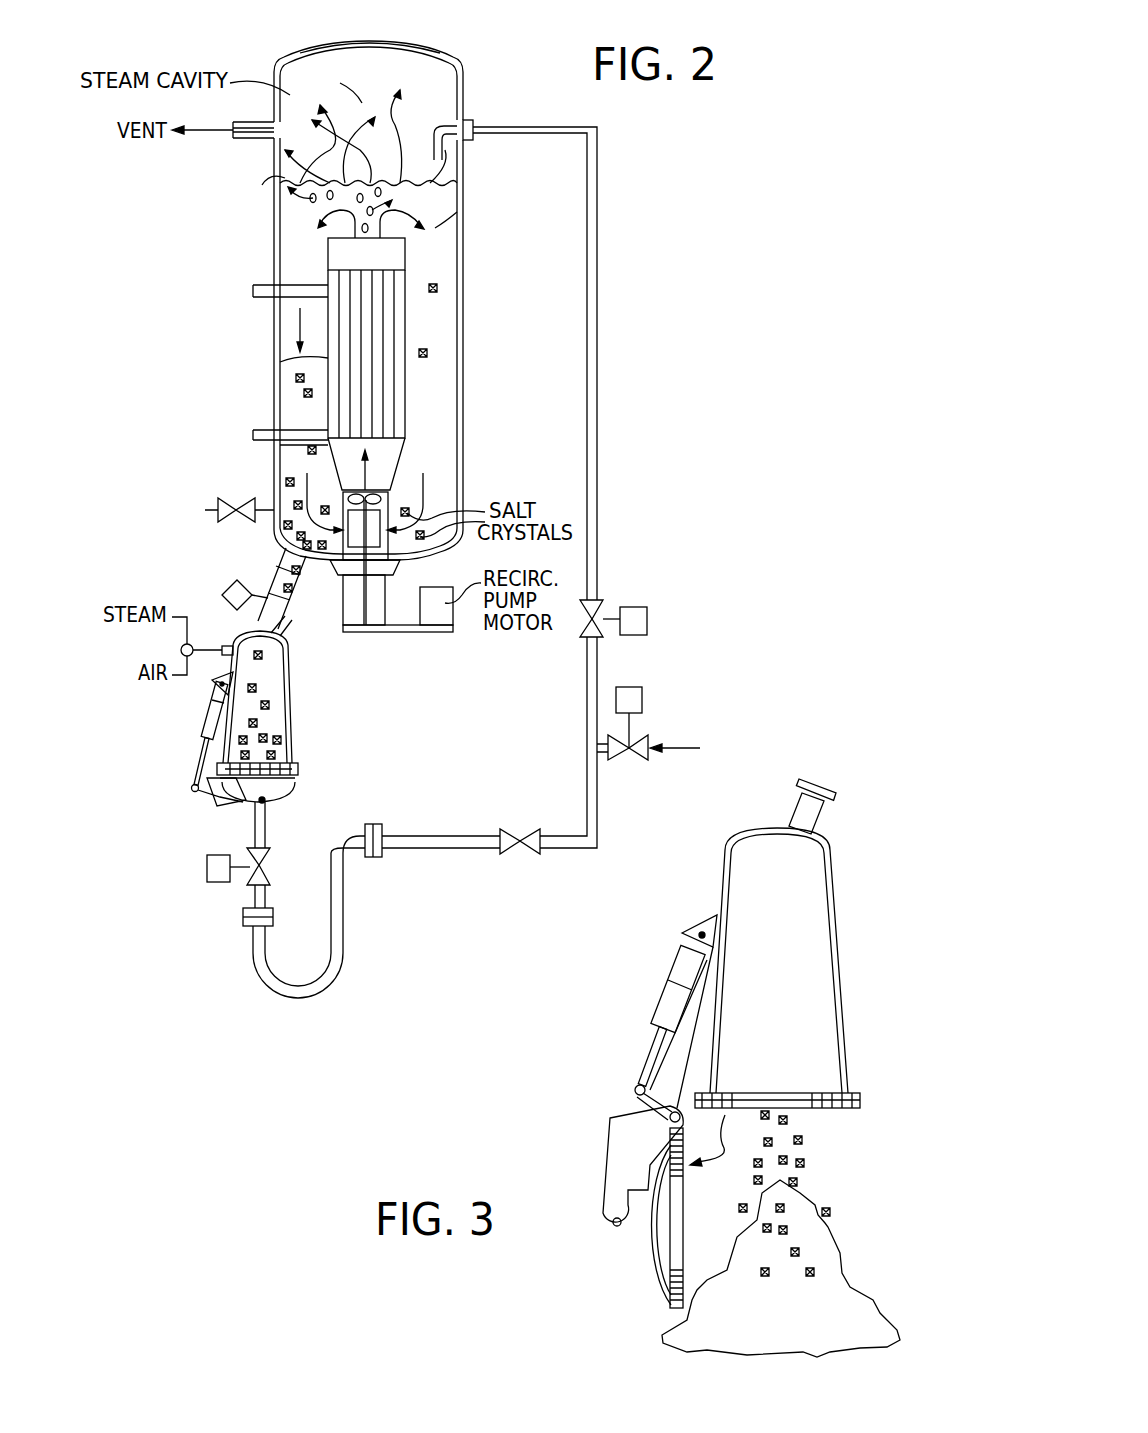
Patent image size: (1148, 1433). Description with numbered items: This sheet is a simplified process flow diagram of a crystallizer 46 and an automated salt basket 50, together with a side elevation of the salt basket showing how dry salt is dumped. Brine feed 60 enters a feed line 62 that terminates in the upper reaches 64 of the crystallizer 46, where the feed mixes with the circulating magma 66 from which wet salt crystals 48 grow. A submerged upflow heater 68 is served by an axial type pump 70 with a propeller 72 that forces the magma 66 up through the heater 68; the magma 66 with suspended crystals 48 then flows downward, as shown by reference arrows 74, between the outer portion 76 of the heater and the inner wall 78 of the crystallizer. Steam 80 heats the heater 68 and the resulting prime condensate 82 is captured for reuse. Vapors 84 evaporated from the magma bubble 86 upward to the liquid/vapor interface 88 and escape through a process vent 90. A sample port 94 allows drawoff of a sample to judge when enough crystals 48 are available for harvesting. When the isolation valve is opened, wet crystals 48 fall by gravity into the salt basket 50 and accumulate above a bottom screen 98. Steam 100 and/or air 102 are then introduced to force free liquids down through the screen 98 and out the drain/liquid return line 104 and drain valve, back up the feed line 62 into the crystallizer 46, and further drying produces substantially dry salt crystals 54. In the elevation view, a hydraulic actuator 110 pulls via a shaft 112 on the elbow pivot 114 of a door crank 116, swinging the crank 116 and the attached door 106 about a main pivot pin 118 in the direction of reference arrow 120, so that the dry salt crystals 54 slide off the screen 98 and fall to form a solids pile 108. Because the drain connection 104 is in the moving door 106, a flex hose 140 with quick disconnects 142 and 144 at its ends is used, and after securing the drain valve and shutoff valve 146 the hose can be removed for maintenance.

In FIG. 2, the crystallizer 46 is at (380, 46).
In FIG. 2, the wet salt crystals 48 is at (440, 290).
In FIG. 2, the salt basket 50 is at (293, 703).
In FIG. 3, the salt basket 50 is at (813, 860).
In FIG. 3, the dry salt crystals 54 is at (830, 1208).
In FIG. 2, the brine feed 60 is at (700, 748).
In FIG. 2, the feed line 62 is at (588, 204).
In FIG. 2, the upper reaches of the crystallizer vessel 64 is at (466, 106).
In FIG. 2, the circulating magma 66 is at (464, 214).
In FIG. 2, the submerged upflow heater 68 is at (328, 246).
In FIG. 2, the axial type pump 70 is at (345, 608).
In FIG. 2, the propeller 72 is at (380, 486).
In FIG. 2, the reference arrows 74 is at (300, 320).
In FIG. 2, the outer portion of the heater 76 is at (285, 361).
In FIG. 2, the inner wall of the crystallizer 78 is at (275, 414).
In FIG. 2, the steam 80 is at (253, 291).
In FIG. 2, the prime condensate 82 is at (253, 435).
In FIG. 2, the vapors 84 is at (336, 82).
In FIG. 2, the bubble 86 is at (320, 200).
In FIG. 2, the liquid/vapor interface 88 is at (262, 185).
In FIG. 2, the process vent 90 is at (240, 145).
In FIG. 2, the sample port 94 is at (205, 510).
In FIG. 2, the bottom screen 98 is at (287, 769).
In FIG. 2, the steam 100 is at (180, 615).
In FIG. 2, the air 102 is at (205, 684).
In FIG. 2, the drain/liquid return line 104 is at (266, 822).
In FIG. 2, the door 106 is at (232, 800).
In FIG. 3, the door 106 is at (660, 1266).
In FIG. 3, the solids pile 108 is at (840, 1252).
In FIG. 2, the hydraulic actuator 110 is at (207, 712).
In FIG. 3, the hydraulic actuator 110 is at (674, 966).
In FIG. 2, the shaft 112 is at (202, 760).
In FIG. 3, the shaft 112 is at (656, 1049).
In FIG. 2, the elbow pivot 114 is at (192, 788).
In FIG. 3, the elbow pivot 114 is at (634, 1090).
In FIG. 2, the door crank 116 is at (205, 800).
In FIG. 3, the door crank 116 is at (620, 1142).
In FIG. 3, the main pivot pin 118 is at (668, 1116).
In FIG. 3, the reference arrow 120 is at (716, 1159).
In FIG. 2, the flex hose 140 is at (267, 980).
In FIG. 2, the quick disconnect 142 is at (243, 917).
In FIG. 2, the quick disconnect 144 is at (374, 857).
In FIG. 2, the shutoff valve 146 is at (521, 853).